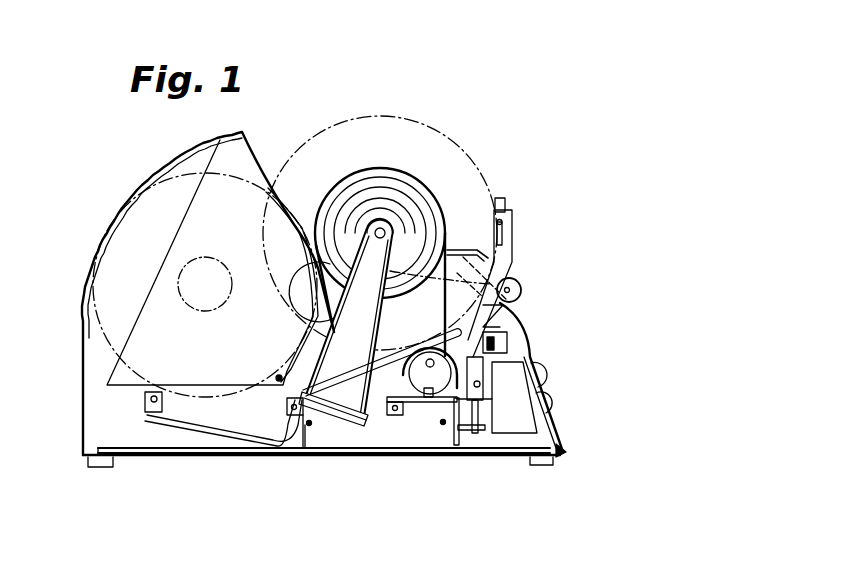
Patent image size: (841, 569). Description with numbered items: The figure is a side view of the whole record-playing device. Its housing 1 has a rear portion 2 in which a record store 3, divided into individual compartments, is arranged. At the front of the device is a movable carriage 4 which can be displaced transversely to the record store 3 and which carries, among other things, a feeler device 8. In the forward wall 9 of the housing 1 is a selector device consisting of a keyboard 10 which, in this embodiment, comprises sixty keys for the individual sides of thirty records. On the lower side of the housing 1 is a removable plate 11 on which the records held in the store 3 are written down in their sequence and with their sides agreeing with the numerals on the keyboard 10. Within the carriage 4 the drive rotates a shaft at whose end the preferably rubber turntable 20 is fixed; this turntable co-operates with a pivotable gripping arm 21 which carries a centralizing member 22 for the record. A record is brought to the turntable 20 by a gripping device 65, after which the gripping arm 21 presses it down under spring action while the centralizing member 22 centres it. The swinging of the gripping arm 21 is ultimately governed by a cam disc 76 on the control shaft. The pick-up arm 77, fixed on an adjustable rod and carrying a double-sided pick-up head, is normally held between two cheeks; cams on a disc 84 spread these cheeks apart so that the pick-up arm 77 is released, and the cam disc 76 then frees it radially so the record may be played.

The housing 1 is at (100, 465).
The rear portion 2 is at (104, 232).
The record store 3 is at (178, 207).
The movable carriage 4 is at (433, 317).
The feeler device 8 is at (507, 335).
The forward wall 9 is at (557, 425).
The keyboard 10 is at (547, 403).
The removable plate 11 is at (463, 458).
The turntable 20 is at (392, 190).
The gripping arm 21 is at (366, 226).
The centralizing member 22 is at (376, 221).
The gripping device 65 is at (225, 433).
The cam disc 76 is at (405, 383).
The pick-up arm 77 is at (513, 223).
The disc 84 is at (432, 390).